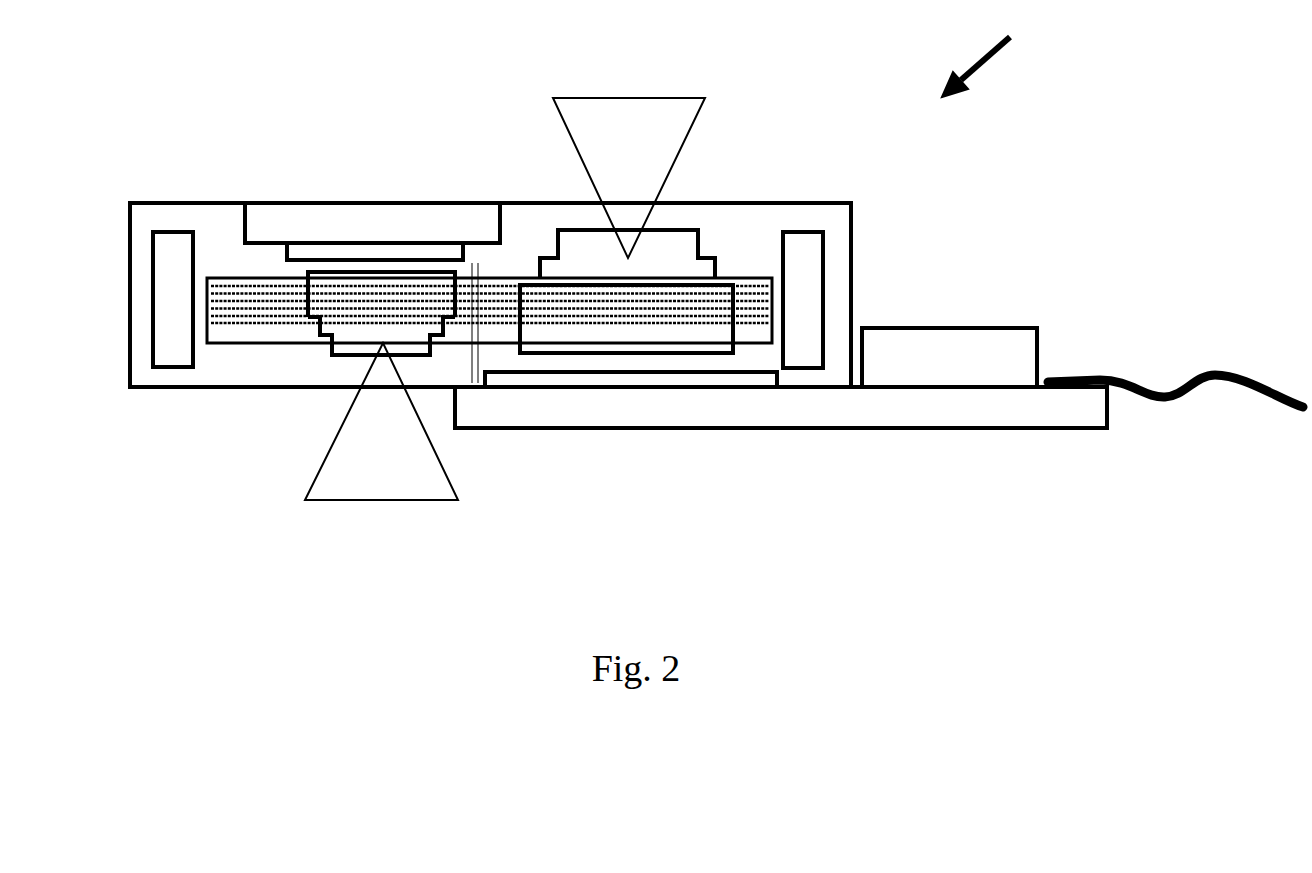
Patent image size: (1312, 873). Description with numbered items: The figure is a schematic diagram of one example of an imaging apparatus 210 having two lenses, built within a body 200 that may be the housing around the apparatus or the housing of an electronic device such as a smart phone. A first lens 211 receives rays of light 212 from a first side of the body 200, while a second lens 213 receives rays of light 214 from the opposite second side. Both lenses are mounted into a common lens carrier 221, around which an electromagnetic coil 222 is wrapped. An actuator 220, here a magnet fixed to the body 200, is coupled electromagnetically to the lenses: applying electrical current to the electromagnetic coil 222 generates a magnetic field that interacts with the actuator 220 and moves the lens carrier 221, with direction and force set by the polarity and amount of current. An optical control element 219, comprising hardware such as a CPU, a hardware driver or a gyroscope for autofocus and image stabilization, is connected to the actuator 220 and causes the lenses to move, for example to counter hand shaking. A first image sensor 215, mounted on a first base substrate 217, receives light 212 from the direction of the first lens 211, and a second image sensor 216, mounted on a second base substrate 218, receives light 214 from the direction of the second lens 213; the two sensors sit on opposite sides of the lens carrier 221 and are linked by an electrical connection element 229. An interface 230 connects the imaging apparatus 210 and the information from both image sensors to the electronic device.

The body 200 is at (222, 227).
The imaging apparatus 210 is at (998, 53).
The first lens 211 is at (672, 243).
The rays of light 212 is at (650, 125).
The second lens 213 is at (340, 355).
The rays of light 214 is at (382, 447).
The first image sensor 215 is at (540, 375).
The second image sensor 216 is at (305, 248).
The first base substrate 217 is at (902, 405).
The second base substrate 218 is at (415, 220).
The optical control element 219 is at (933, 348).
The actuator 220 is at (182, 255).
The lens carrier 221 is at (227, 332).
The electromagnetic coil 222 is at (293, 323).
The electrical connection element 229 is at (475, 263).
The interface 230 is at (1157, 402).